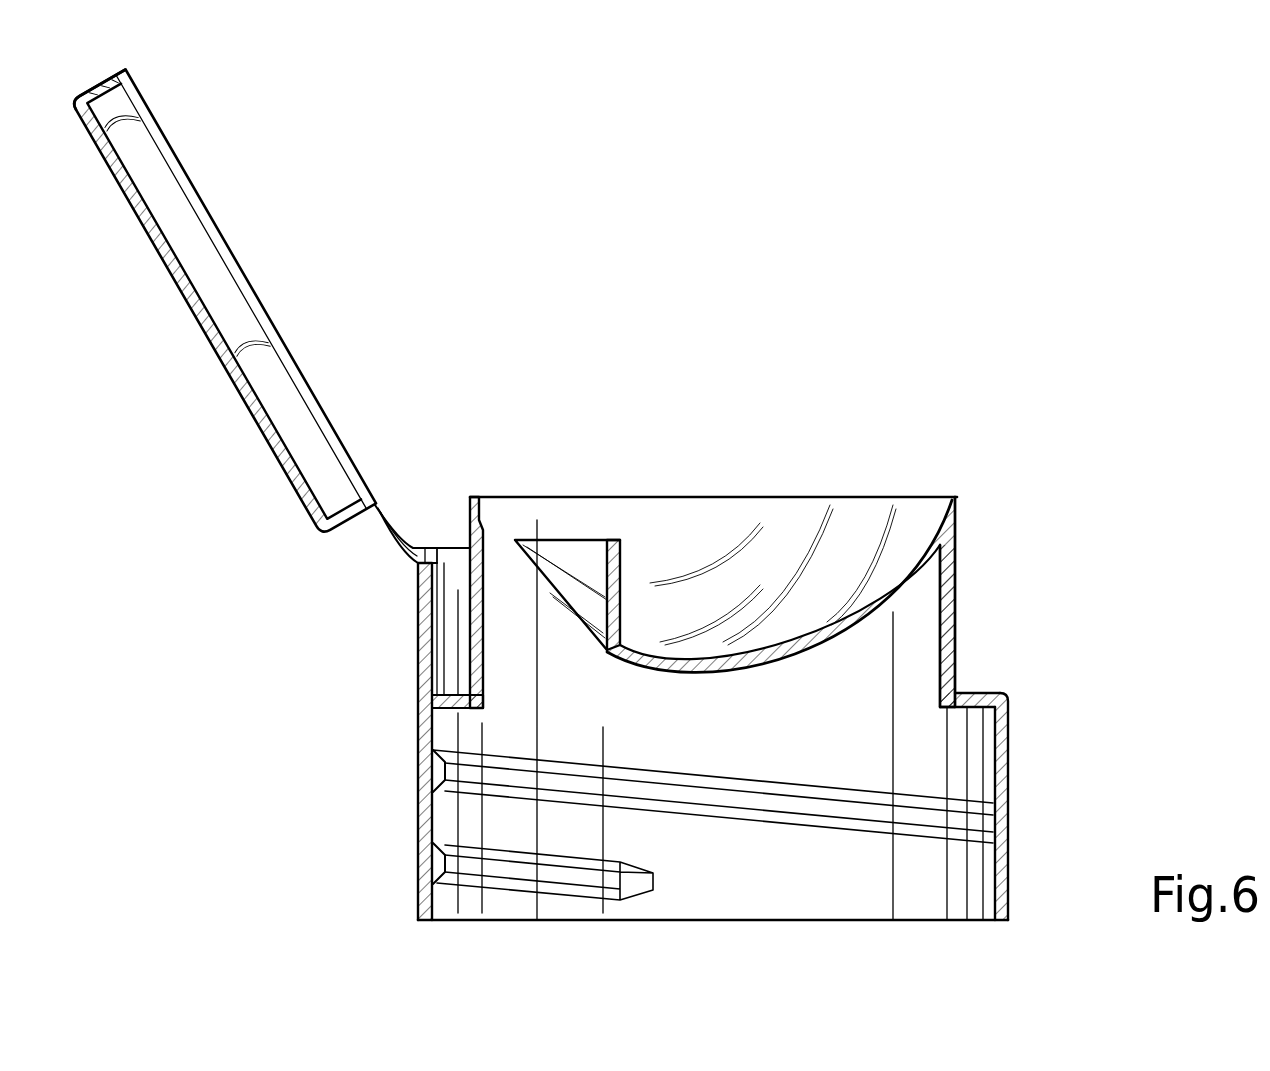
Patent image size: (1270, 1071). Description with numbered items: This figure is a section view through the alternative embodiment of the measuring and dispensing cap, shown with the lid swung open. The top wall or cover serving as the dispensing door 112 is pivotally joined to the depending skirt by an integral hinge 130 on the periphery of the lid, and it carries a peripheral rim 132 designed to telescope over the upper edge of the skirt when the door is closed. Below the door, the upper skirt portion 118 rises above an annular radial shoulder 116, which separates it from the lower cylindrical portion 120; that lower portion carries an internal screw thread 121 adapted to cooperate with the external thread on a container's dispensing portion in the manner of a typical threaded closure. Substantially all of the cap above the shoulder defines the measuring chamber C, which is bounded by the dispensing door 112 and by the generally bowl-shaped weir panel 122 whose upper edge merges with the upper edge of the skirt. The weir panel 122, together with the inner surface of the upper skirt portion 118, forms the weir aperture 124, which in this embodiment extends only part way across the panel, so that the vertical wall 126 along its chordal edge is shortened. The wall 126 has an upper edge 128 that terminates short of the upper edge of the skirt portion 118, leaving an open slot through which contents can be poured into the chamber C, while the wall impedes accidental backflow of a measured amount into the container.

The dispensing door 112 is at (252, 470).
The peripheral rim 132 is at (93, 77).
The hinge 130 is at (384, 549).
The weir aperture 124 is at (501, 568).
The upper edge of vertical wall 128 is at (610, 540).
The vertical wall 126 is at (620, 600).
The weir panel 122 is at (727, 509).
The measuring chamber C is at (858, 510).
The upper skirt portion 118 is at (958, 621).
The annular radial shoulder 116 is at (968, 693).
The lower cylindrical portion 120 is at (1012, 783).
The internal screw thread 121 is at (773, 817).